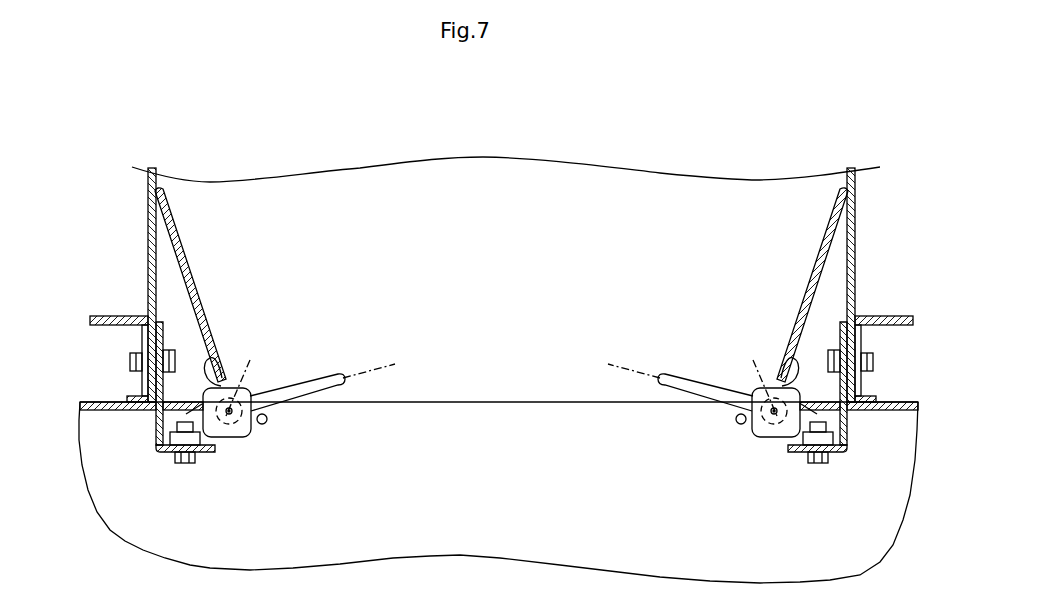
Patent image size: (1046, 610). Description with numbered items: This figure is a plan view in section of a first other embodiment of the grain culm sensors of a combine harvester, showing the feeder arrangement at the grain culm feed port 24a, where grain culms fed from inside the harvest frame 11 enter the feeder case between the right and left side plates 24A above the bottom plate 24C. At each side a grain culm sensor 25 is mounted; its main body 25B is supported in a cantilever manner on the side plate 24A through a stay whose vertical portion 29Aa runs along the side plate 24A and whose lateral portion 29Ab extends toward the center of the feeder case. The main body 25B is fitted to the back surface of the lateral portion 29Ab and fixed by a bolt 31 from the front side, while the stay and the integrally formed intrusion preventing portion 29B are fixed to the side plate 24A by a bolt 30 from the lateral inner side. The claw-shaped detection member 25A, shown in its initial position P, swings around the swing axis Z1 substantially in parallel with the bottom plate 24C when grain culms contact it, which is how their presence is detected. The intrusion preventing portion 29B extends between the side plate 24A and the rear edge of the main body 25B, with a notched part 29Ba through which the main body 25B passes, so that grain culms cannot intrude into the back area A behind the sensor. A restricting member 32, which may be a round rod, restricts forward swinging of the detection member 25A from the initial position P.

The harvest frame 11 is at (100, 412).
The side plate 24A is at (146, 259).
The bottom plate 24C is at (485, 178).
The grain culm feed port 24a is at (503, 410).
The grain culm sensor 25 is at (501, 445).
The detection member 25A is at (272, 408).
The main body 25B is at (240, 433).
The vertical portion 29Aa is at (155, 423).
The lateral portion 29Ab is at (207, 455).
The intrusion preventing portion 29B is at (212, 313).
The notched part 29Ba is at (219, 348).
The bolt 30 is at (130, 362).
The bolt 31 is at (188, 467).
The restricting member 32 is at (267, 427).
The back area A is at (200, 362).
The initial position P is at (501, 364).
The swing axis Z1 is at (501, 376).